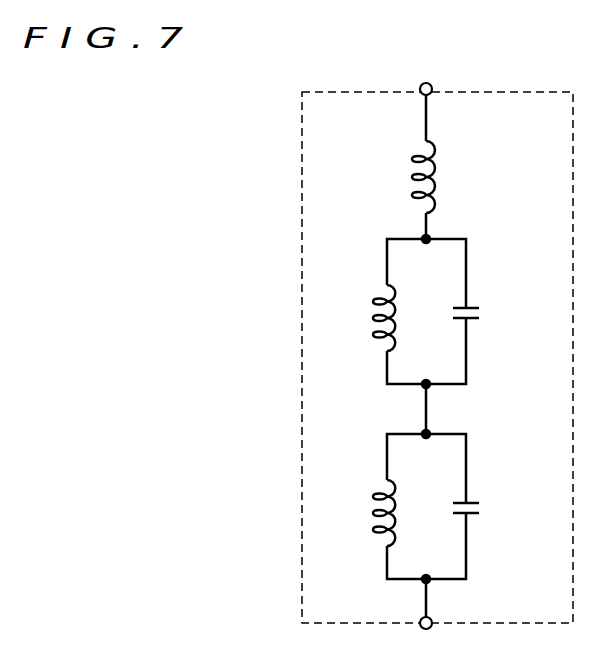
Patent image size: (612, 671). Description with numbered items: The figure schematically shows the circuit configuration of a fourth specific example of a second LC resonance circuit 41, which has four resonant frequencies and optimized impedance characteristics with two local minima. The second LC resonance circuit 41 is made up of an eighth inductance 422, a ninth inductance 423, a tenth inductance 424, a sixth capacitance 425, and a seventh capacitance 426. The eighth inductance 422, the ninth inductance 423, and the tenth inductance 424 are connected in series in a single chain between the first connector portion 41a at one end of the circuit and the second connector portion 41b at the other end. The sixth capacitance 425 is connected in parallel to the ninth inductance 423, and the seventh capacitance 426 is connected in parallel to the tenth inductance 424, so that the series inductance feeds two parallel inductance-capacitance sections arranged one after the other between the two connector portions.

The second LC resonance circuit 41 is at (507, 92).
The first connector portion 41a is at (428, 83).
The second connector portion 41b is at (428, 629).
The eighth inductance 422 is at (438, 151).
The ninth inductance 423 is at (382, 301).
The tenth inductance 424 is at (382, 496).
The sixth capacitance 425 is at (481, 311).
The seventh capacitance 426 is at (481, 507).